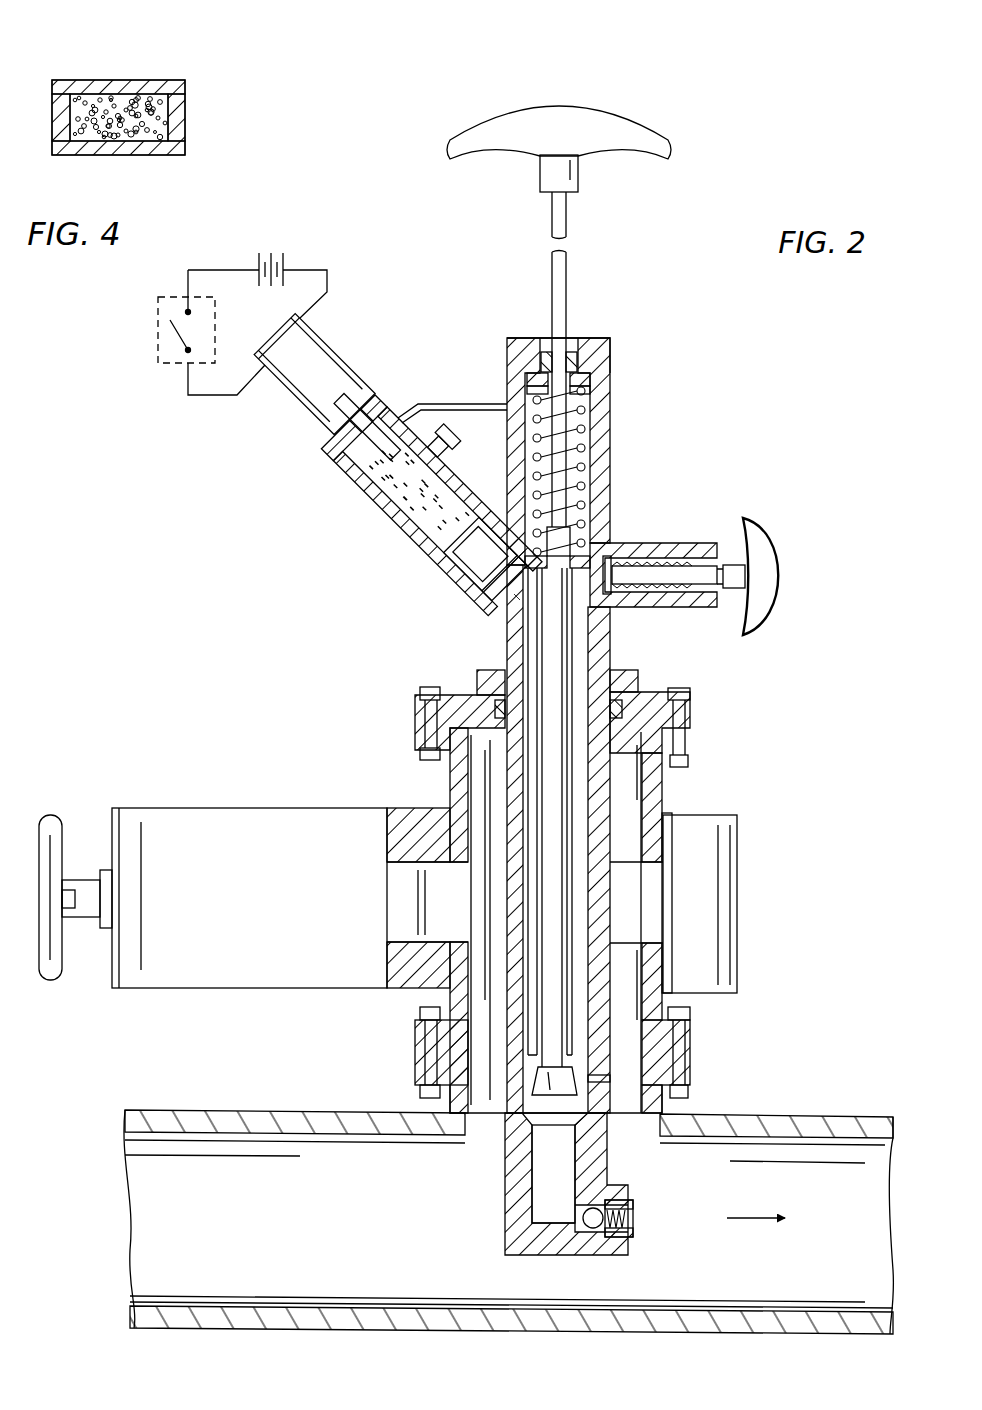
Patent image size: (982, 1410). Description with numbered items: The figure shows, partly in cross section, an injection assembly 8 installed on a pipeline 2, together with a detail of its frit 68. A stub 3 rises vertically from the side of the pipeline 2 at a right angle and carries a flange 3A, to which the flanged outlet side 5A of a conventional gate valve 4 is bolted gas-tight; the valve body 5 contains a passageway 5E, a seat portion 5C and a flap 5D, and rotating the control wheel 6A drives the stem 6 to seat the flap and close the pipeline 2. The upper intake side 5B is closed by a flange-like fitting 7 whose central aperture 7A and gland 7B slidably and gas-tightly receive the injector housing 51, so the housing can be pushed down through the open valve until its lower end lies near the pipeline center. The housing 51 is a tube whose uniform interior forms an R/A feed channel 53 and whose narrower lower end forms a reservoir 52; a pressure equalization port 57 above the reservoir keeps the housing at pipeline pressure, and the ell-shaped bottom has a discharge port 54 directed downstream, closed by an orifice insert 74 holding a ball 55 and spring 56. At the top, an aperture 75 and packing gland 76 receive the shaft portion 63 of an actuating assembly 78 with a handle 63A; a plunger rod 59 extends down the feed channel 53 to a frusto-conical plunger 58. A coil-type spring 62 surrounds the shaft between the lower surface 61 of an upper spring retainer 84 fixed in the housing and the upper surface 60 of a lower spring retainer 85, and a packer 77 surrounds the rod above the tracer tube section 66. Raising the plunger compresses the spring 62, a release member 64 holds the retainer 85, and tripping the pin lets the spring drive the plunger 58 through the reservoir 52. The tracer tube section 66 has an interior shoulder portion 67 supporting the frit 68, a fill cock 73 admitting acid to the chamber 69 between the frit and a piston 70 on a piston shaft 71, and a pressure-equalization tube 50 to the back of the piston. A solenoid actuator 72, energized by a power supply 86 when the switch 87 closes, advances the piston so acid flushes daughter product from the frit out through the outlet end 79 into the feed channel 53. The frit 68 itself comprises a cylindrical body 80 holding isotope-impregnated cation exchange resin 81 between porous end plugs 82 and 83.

In FIG. 2, the pipeline 2 is at (835, 1115).
In FIG. 2, the stub 3 is at (450, 1095).
In FIG. 2, the flange 3A is at (688, 1048).
In FIG. 2, the gate valve 4 is at (752, 918).
In FIG. 2, the valve body 5 is at (740, 828).
In FIG. 2, the flanged outlet side 5A is at (415, 1035).
In FIG. 2, the intake side 5B is at (415, 740).
In FIG. 2, the seat portion 5C is at (722, 875).
In FIG. 2, the flap 5D is at (400, 910).
In FIG. 2, the passageway 5E is at (473, 883).
In FIG. 2, the stem 6 is at (88, 920).
In FIG. 2, the control wheel 6A is at (50, 815).
In FIG. 2, the flange-like fitting 7 is at (690, 700).
In FIG. 2, the central aperture 7A is at (477, 675).
In FIG. 2, the gland 7B is at (688, 715).
In FIG. 2, the injection assembly 8 is at (722, 393).
In FIG. 2, the pressure-equalization tube 50 is at (460, 403).
In FIG. 2, the injector housing 51 is at (612, 482).
In FIG. 2, the reservoir 52 is at (562, 1170).
In FIG. 2, the R/A feed channel 53 is at (577, 812).
In FIG. 2, the discharge port 54 is at (648, 1238).
In FIG. 2, the ball 55 is at (550, 1255).
In FIG. 2, the spring 56 is at (620, 1205).
In FIG. 2, the pressure equalization port 57 is at (612, 1080).
In FIG. 2, the plunger 58 is at (540, 1097).
In FIG. 2, the plunger rod 59 is at (577, 918).
In FIG. 2, the upper surface of lower spring retainer 60 is at (592, 560).
In FIG. 2, the lower surface of upper spring retainer 61 is at (592, 404).
In FIG. 2, the coil-type spring 62 is at (590, 446).
In FIG. 2, the shaft portion 63 is at (572, 493).
In FIG. 2, the handle 63A is at (614, 112).
In FIG. 2, the release member 64 is at (655, 586).
In FIG. 2, the tracer tube section 66 is at (395, 528).
In FIG. 2, the interior shoulder portion 67 is at (490, 602).
In FIG. 4, the frit 68 is at (120, 158).
In FIG. 2, the frit 68 is at (455, 590).
In FIG. 2, the chamber 69 is at (412, 560).
In FIG. 2, the piston 70 is at (360, 490).
In FIG. 2, the piston shaft 71 is at (392, 408).
In FIG. 2, the solenoid actuator 72 is at (285, 408).
In FIG. 2, the fill cock 73 is at (452, 438).
In FIG. 2, the orifice insert 74 is at (634, 1216).
In FIG. 2, the aperture 75 is at (590, 362).
In FIG. 2, the packing gland 76 is at (543, 352).
In FIG. 2, the packer 77 is at (716, 600).
In FIG. 2, the actuating assembly 78 is at (568, 282).
In FIG. 2, the outlet end 79 is at (514, 594).
In FIG. 4, the cylindrical body 80 is at (146, 80).
In FIG. 4, the cation exchange resin 81 is at (93, 80).
In FIG. 4, the end plug 82 is at (55, 115).
In FIG. 4, the end plug 83 is at (186, 115).
In FIG. 2, the upper spring retainer 84 is at (527, 376).
In FIG. 2, the lower spring retainer 85 is at (592, 585).
In FIG. 2, the power supply 86 is at (264, 253).
In FIG. 2, the switch 87 is at (157, 350).